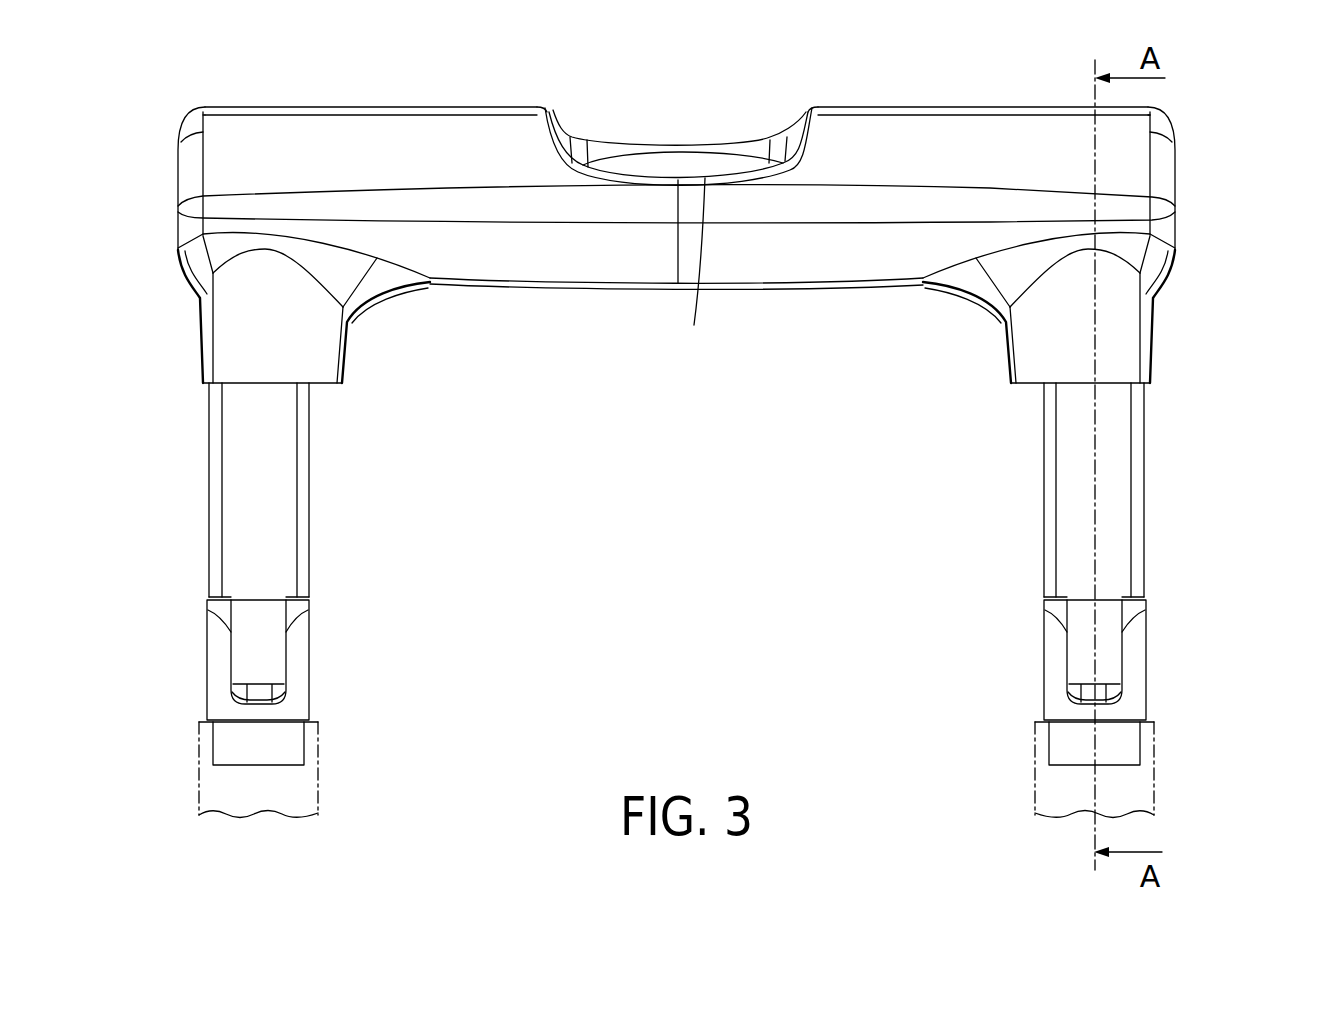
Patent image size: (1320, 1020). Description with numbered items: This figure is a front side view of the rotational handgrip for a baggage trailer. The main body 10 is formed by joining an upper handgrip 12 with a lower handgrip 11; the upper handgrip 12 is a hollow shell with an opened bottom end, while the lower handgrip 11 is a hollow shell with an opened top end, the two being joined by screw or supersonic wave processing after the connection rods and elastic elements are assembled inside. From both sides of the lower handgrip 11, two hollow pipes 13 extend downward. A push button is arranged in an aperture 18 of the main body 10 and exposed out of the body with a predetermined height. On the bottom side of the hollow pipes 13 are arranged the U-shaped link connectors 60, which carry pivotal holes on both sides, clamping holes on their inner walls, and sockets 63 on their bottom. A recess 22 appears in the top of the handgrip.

The main body 10 is at (1222, 147).
The lower handgrip 11 is at (803, 268).
The upper handgrip 12 is at (962, 99).
The hollow pipes 13 is at (1125, 482).
The aperture 18 is at (690, 268).
The grip recess 22 is at (665, 128).
The link connectors 60 is at (1053, 663).
The sockets 63 is at (1078, 750).